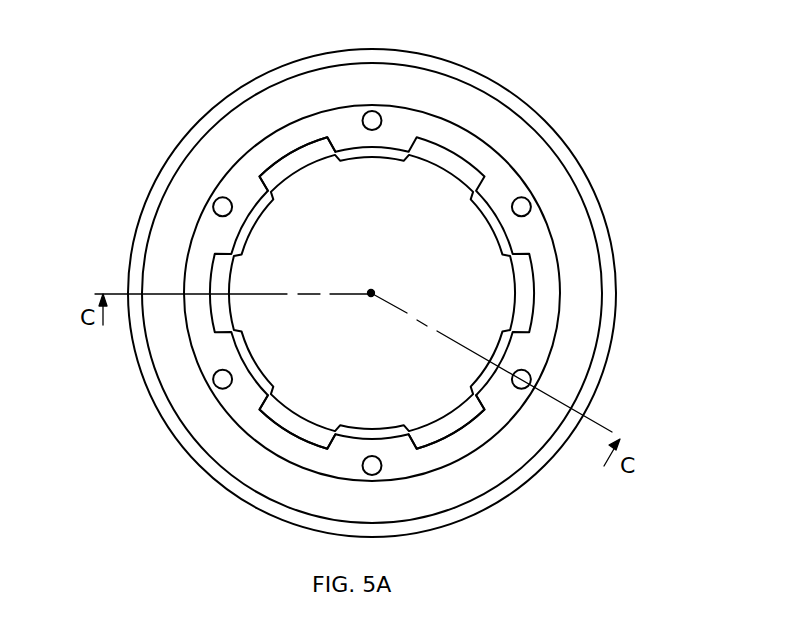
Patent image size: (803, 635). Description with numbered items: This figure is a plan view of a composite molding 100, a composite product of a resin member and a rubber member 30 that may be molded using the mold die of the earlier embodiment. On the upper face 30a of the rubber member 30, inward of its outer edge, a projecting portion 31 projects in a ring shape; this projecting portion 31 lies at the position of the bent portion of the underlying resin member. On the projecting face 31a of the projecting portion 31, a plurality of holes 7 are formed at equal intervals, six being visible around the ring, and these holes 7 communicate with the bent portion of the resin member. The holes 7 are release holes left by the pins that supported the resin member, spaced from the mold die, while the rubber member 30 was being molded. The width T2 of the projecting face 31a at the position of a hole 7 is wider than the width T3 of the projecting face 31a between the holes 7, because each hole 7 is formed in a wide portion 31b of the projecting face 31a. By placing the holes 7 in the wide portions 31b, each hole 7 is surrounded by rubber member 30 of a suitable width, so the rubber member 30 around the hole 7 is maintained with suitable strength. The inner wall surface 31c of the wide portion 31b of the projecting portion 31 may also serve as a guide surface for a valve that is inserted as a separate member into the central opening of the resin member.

The composite molding 100 is at (583, 55).
The holes 7 is at (372, 120).
The rubber member 30 is at (608, 263).
The upper face 30a is at (448, 103).
The projecting portion 31 is at (502, 173).
The projecting face 31a is at (263, 150).
The wide portions 31b is at (398, 445).
The inner wall surface 31c is at (260, 372).
The width of the projecting face positioned in the hole T2 is at (231, 239).
The width of the projecting face between the holes T3 is at (209, 318).